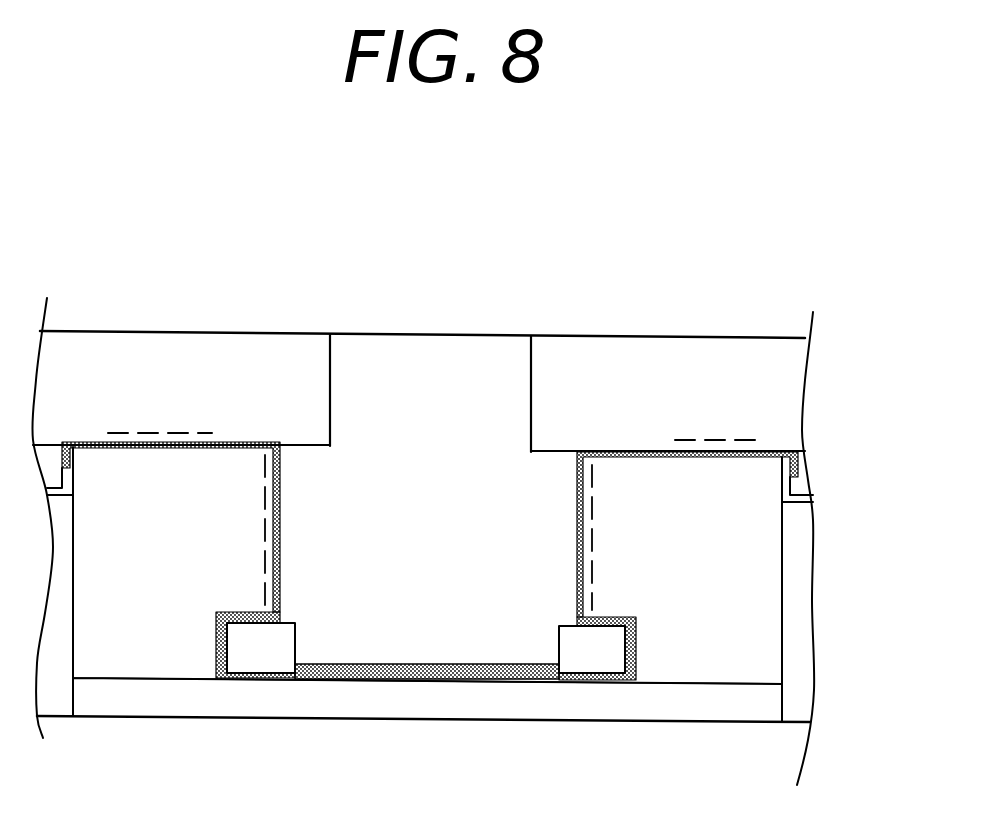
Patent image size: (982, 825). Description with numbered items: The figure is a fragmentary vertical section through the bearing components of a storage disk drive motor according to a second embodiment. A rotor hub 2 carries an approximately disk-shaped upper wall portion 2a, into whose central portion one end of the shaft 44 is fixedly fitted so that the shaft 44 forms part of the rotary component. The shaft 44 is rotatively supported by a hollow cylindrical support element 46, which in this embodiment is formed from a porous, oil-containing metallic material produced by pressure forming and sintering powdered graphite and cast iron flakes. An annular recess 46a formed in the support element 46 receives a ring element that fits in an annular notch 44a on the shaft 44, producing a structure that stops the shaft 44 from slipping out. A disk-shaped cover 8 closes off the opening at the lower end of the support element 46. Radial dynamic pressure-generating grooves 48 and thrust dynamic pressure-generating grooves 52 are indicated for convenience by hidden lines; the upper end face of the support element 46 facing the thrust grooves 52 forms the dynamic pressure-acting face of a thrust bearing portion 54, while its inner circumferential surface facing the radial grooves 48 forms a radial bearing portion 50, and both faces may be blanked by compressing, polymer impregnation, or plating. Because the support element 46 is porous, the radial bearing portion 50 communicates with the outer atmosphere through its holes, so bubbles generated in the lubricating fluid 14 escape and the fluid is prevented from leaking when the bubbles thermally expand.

The rotor hub 2 is at (779, 324).
The upper wall portion 2a is at (599, 360).
The cover 8 is at (723, 700).
The lubricating fluid 14 is at (413, 670).
The shaft 44 is at (430, 378).
The annular notch 44a is at (559, 650).
The support element 46 is at (733, 593).
The annular recess 46a is at (227, 647).
The radial dynamic pressure-generating grooves 48 is at (265, 523).
The radial bearing portion 50 is at (562, 550).
The thrust dynamic pressure-generating grooves 52 is at (650, 440).
The thrust bearing portion 54 is at (229, 430).